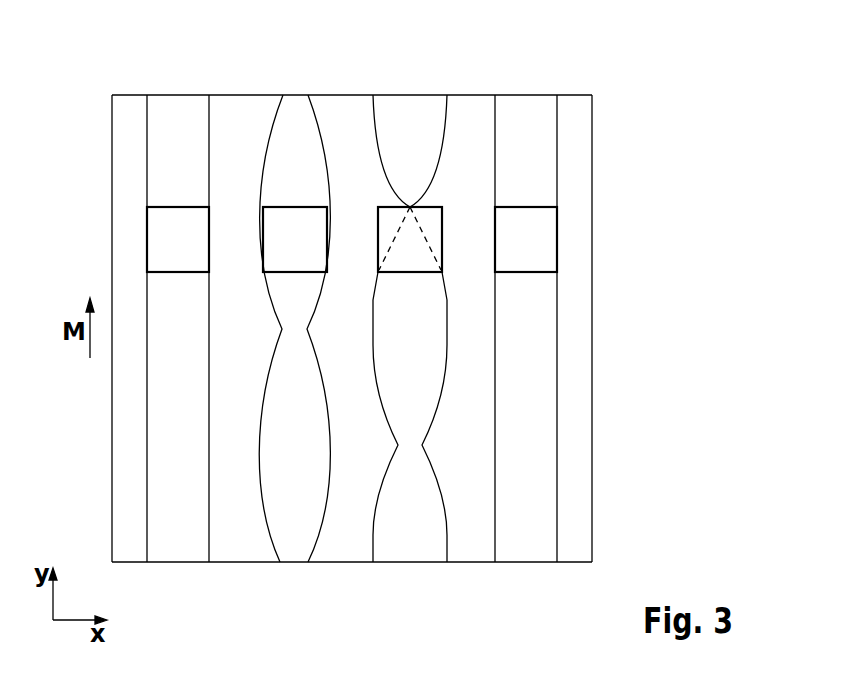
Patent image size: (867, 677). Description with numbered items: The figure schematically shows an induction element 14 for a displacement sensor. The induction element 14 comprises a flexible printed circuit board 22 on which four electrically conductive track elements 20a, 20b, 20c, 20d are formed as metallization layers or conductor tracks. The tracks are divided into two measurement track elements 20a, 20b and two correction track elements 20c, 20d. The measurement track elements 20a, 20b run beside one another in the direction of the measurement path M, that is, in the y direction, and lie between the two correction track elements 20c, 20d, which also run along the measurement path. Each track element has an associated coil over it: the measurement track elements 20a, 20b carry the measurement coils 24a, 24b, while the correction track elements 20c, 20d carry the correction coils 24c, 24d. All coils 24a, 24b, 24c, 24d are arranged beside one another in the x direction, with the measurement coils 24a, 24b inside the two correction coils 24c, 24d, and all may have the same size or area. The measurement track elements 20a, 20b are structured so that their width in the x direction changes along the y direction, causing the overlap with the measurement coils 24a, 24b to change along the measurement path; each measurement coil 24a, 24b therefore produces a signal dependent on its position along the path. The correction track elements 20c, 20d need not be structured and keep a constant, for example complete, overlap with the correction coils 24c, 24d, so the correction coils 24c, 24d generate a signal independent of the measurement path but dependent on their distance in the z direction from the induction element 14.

The induction element 14 is at (610, 88).
The measurement track element 20a is at (293, 550).
The measurement track element 20b is at (408, 550).
The correction track element 20c is at (175, 550).
The correction track element 20d is at (525, 550).
The printed circuit board 22 is at (465, 550).
The measurement coil 24a is at (297, 223).
The measurement coil 24b is at (412, 223).
The correction coil 24c is at (166, 240).
The correction coil 24d is at (537, 240).